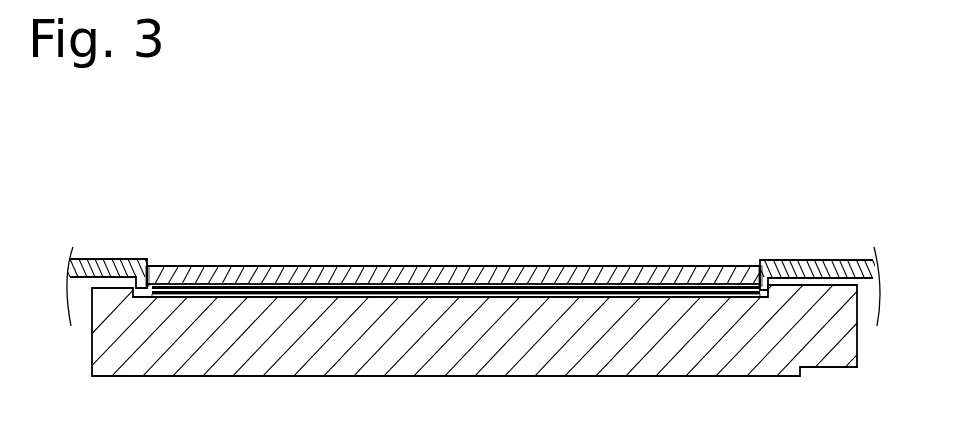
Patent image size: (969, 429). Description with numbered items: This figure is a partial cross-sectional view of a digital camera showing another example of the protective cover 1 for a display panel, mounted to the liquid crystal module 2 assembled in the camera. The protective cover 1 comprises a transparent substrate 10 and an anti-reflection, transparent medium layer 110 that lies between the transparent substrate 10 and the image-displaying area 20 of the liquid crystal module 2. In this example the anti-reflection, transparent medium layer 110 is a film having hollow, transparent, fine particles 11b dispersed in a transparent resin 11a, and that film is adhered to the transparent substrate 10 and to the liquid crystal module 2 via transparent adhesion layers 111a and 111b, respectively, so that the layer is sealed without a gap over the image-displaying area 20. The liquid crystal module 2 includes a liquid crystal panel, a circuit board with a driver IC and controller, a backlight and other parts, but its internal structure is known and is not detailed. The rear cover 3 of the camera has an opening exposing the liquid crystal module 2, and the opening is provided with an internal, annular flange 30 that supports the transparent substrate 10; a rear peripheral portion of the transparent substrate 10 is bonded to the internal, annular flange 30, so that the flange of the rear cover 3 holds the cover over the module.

The protective cover 1 is at (455, 208).
The transparent substrate 10 is at (455, 224).
The anti-reflection, transparent medium layer 110 is at (456, 228).
The transparent resin 11a is at (519, 286).
The hollow, transparent, fine particles 11b is at (503, 192).
The transparent adhesion layer 111a is at (306, 266).
The transparent adhesion layer 111b is at (660, 266).
The liquid crystal module 2 is at (458, 342).
The image-displaying area 20 is at (549, 298).
The rear cover 3 is at (100, 258).
The internal, annular flange 30 is at (148, 268).